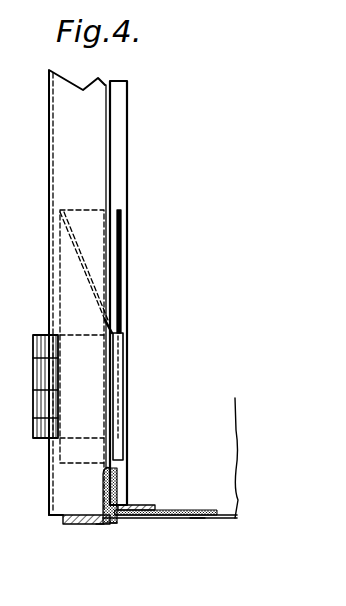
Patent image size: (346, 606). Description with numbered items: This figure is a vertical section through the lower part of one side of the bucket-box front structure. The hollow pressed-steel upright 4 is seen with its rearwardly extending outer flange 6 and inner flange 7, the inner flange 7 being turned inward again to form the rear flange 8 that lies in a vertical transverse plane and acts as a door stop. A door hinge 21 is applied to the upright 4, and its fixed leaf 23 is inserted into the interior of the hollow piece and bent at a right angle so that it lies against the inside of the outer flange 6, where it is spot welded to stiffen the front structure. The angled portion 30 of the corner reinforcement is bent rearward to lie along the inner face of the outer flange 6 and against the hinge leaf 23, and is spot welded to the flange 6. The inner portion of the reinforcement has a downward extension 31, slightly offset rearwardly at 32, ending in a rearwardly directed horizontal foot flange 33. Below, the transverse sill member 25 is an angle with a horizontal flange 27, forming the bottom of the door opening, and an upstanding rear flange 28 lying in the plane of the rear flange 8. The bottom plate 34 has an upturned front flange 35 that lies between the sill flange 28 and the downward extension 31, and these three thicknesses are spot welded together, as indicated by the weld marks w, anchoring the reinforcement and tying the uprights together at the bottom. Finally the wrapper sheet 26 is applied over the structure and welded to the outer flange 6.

The upright 4 is at (46, 156).
The inner flange 7 is at (66, 183).
The rear flange 8 is at (110, 153).
The outer flange 6 is at (127, 185).
The angled portion 30 is at (120, 275).
The fixed hinge leaf 23 is at (123, 343).
The door hinge 21 is at (44, 380).
The rearward offset 32 is at (110, 468).
The downward extension 31 is at (121, 473).
The foot flange 33 is at (143, 505).
The wrapper sheet 26 is at (238, 504).
The upstanding rear flange 28 is at (103, 488).
The horizontal flange 27 is at (77, 524).
The sill member 25 is at (100, 526).
The upturned front flange 35 is at (117, 523).
The bottom plate 34 is at (197, 520).
The weld w is at (122, 487).